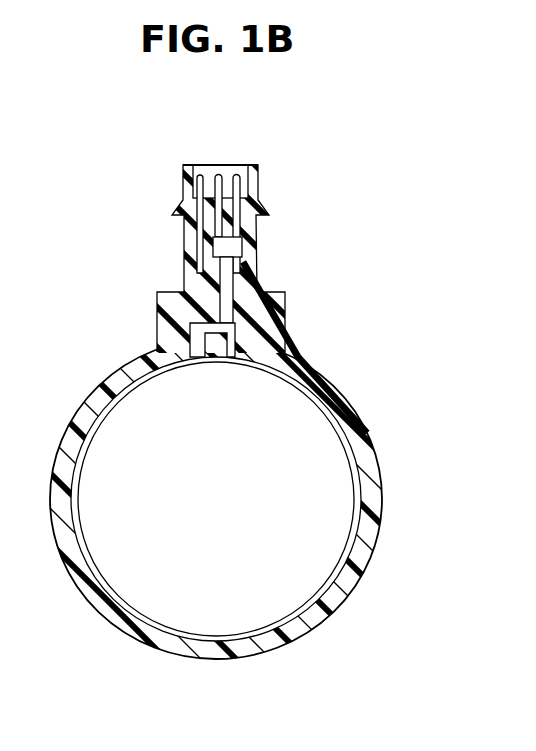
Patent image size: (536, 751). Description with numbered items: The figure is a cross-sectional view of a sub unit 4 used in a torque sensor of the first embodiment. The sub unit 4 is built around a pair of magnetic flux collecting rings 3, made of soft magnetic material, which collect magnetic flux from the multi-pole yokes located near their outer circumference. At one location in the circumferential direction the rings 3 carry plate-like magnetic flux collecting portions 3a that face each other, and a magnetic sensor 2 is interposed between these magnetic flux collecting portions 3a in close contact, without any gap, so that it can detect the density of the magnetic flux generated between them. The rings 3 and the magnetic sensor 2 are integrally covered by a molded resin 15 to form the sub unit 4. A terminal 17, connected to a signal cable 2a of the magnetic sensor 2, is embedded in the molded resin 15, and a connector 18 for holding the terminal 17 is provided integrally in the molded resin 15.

The magnetic sensor 2 is at (252, 332).
The signal cable 2a is at (243, 311).
The magnetic flux collecting rings 3 is at (347, 440).
The magnetic flux collecting portions 3a is at (208, 342).
The sub unit 4 is at (316, 202).
The molded resin 15 is at (160, 311).
The terminal 17 is at (218, 174).
The connector 18 is at (258, 171).